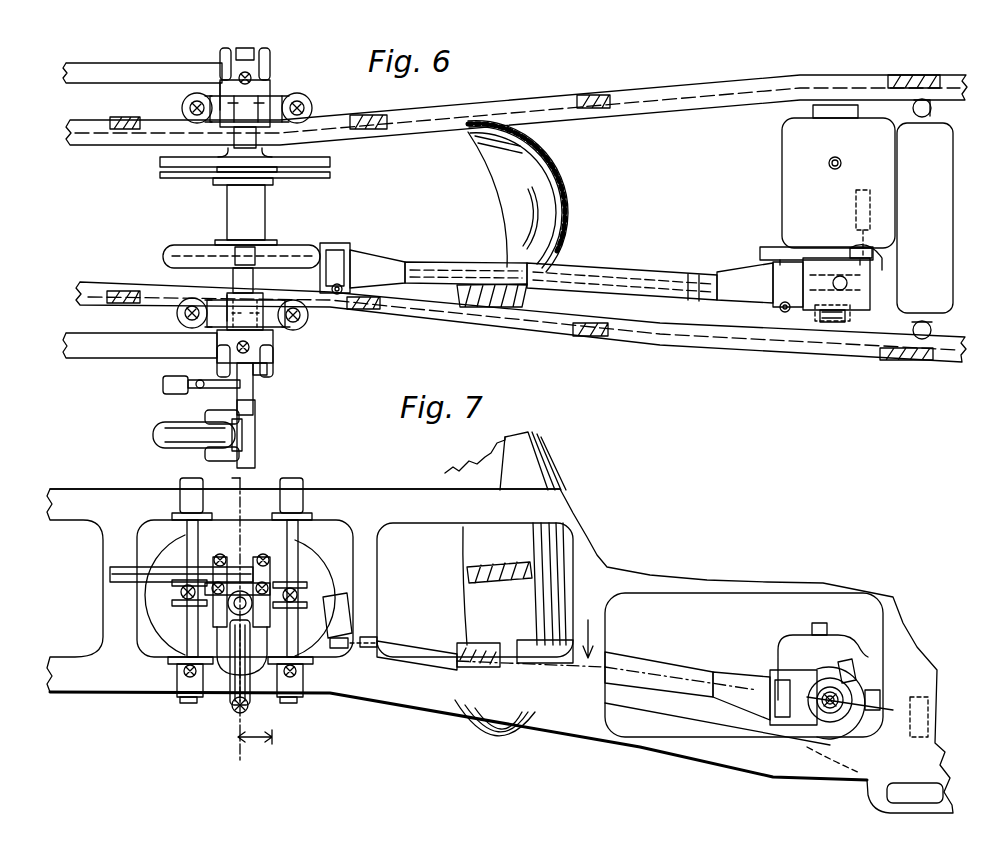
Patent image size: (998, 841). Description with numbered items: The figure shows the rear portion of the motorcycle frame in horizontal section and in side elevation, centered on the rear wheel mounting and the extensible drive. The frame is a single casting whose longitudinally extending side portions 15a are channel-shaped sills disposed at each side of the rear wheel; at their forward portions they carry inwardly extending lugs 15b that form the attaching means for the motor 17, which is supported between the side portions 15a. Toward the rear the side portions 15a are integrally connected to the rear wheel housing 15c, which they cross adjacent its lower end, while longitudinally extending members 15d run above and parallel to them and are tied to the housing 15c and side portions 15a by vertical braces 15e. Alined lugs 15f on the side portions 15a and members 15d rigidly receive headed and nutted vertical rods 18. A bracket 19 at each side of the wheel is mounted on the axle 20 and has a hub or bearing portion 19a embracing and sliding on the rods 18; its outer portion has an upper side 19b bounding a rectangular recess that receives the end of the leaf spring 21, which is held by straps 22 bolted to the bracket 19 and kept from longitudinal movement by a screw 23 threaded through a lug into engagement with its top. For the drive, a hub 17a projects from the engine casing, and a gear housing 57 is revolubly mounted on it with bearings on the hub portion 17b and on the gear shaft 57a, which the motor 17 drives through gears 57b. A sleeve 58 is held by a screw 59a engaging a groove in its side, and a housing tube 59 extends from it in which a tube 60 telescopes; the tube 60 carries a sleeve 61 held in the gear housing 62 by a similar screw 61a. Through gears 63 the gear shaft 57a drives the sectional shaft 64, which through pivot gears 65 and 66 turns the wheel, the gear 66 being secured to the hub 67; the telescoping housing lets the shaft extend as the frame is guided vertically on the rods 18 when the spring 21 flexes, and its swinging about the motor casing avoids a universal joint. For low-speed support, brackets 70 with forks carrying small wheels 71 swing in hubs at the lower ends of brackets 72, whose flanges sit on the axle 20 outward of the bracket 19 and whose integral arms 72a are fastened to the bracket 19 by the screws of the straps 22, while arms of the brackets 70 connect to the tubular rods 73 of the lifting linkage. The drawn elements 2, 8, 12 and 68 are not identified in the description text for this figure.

In FIG. 7, the direction arrow 2 is at (586, 630).
In FIG. 7, the section line 8 is at (250, 617).
In FIG. 7, the belt 12 is at (525, 665).
In FIG. 6, the side portions 15a is at (68, 130).
In FIG. 7, the side portions 15a is at (77, 693).
In FIG. 6, the lugs 15b is at (932, 118).
In FIG. 6, the rear wheel housing 15c is at (567, 210).
In FIG. 7, the rear wheel housing 15c is at (545, 470).
In FIG. 7, the longitudinally extending members 15d is at (72, 489).
In FIG. 6, the braces 15e is at (110, 120).
In FIG. 7, the braces 15e is at (104, 542).
In FIG. 7, the lugs 15f is at (240, 500).
In FIG. 6, the motor 17 is at (898, 150).
In FIG. 7, the motor 17 is at (873, 643).
In FIG. 6, the hub 17a is at (780, 252).
In FIG. 6, the portion of hub 17b is at (870, 252).
In FIG. 6, the rods 18 is at (182, 106).
In FIG. 7, the rods 18 is at (183, 527).
In FIG. 6, the bracket 19 is at (308, 100).
In FIG. 7, the bracket 19 is at (220, 603).
In FIG. 6, the hub or bearing portion 19a is at (190, 95).
In FIG. 7, the hub or bearing portion 19a is at (180, 587).
In FIG. 6, the upper side 19b is at (226, 82).
In FIG. 7, the upper side 19b is at (218, 555).
In FIG. 6, the axle 20 is at (234, 132).
In FIG. 7, the axle 20 is at (247, 590).
In FIG. 6, the leaf spring 21 is at (62, 72).
In FIG. 7, the leaf spring 21 is at (110, 573).
In FIG. 6, the straps 22 is at (272, 62).
In FIG. 7, the straps 22 is at (262, 554).
In FIG. 6, the screw 23 is at (262, 80).
In FIG. 6, the gear housing 57 is at (870, 272).
In FIG. 7, the gear housing 57 is at (828, 686).
In FIG. 6, the gear shaft 57a is at (880, 246).
In FIG. 7, the gear shaft 57a is at (823, 712).
In FIG. 6, the gears 57b is at (856, 214).
In FIG. 6, the sleeve 58 is at (740, 302).
In FIG. 7, the sleeve 58 is at (731, 668).
In FIG. 6, the housing tube 59 is at (612, 268).
In FIG. 7, the housing tube 59 is at (638, 665).
In FIG. 6, the screw 59a is at (784, 313).
In FIG. 7, the screw 59a is at (792, 672).
In FIG. 6, the tube 60 is at (453, 261).
In FIG. 7, the tube 60 is at (452, 652).
In FIG. 6, the sleeve 61 is at (380, 258).
In FIG. 7, the sleeve 61 is at (400, 636).
In FIG. 6, the screw 61a is at (338, 295).
In FIG. 7, the screw 61a is at (358, 600).
In FIG. 6, the gear housing 62 is at (338, 242).
In FIG. 7, the gear housing 62 is at (352, 597).
In FIG. 6, the gears 63 is at (848, 318).
In FIG. 6, the shaft 64 is at (668, 274).
In FIG. 6, the pivot gear 65 is at (340, 254).
In FIG. 6, the pivot gear 66 is at (290, 246).
In FIG. 6, the hub 67 is at (227, 207).
In FIG. 6, the pulley 68 is at (160, 164).
In FIG. 6, the brackets 70 is at (256, 436).
In FIG. 6, the small wheels 71 is at (153, 436).
In FIG. 6, the brackets 72 is at (250, 50).
In FIG. 7, the brackets 72 is at (252, 690).
In FIG. 6, the arms 72a is at (268, 380).
In FIG. 7, the arms 72a is at (228, 672).
In FIG. 6, the rods 73 is at (178, 394).